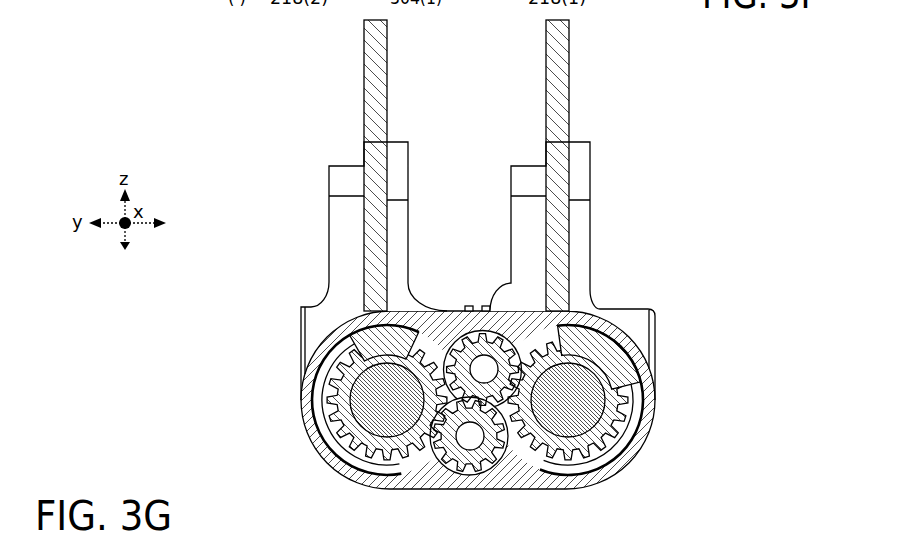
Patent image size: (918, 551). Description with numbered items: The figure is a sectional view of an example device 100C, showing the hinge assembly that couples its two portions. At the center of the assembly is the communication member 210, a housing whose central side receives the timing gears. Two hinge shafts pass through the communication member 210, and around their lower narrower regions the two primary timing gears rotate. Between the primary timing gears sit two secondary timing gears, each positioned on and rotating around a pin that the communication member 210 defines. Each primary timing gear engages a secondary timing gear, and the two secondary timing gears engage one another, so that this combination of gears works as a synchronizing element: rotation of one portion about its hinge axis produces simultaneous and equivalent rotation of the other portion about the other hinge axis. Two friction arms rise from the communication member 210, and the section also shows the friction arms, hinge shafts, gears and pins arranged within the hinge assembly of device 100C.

The device 100C is at (847, 61).
The communication member 210 is at (668, 399).